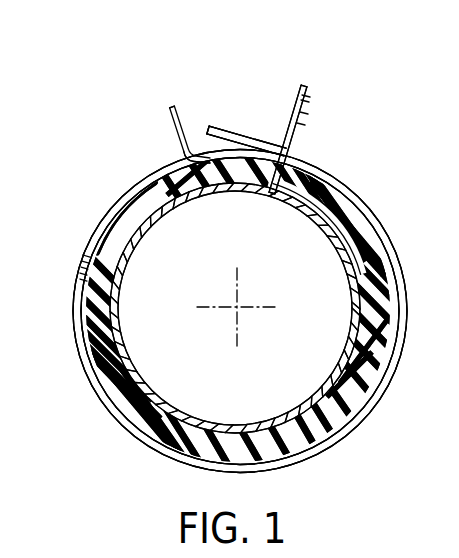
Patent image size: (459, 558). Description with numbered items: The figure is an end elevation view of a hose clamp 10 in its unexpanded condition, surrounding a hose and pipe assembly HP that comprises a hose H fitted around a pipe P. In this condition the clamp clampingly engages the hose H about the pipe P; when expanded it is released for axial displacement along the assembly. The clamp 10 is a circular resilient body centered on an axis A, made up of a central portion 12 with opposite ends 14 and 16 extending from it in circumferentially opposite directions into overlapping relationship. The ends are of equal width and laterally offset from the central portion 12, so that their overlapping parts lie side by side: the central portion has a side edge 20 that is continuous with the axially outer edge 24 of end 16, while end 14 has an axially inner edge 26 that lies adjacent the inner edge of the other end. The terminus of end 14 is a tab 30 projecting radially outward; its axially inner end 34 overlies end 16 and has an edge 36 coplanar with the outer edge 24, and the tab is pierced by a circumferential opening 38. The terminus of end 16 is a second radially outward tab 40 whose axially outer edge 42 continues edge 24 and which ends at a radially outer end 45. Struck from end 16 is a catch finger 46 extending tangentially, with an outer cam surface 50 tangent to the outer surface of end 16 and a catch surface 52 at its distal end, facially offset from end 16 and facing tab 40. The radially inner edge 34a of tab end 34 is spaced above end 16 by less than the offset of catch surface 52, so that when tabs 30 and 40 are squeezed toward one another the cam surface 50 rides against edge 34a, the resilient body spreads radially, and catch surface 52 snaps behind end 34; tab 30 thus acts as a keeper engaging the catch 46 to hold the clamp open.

The hose clamp 10 is at (393, 93).
The central portion 12 is at (162, 458).
The end 14 is at (123, 190).
The end 16 is at (372, 207).
The side edge 20 is at (298, 453).
The axially outer edge 24 is at (375, 225).
The axially inner edge 26 is at (110, 218).
The tab 30 is at (308, 80).
The axially inner end 34 is at (300, 133).
The radially inner edge 34a is at (272, 188).
The edge 36 is at (302, 115).
The opening 38 is at (312, 98).
The tab 40 is at (163, 103).
The axially outer edge 42 is at (178, 128).
The radially outer end 45 is at (173, 107).
The finger 46 is at (222, 127).
The outer cam surface 50 is at (237, 133).
The catch surface 52 is at (213, 133).
The hose H is at (337, 218).
The pipe P is at (345, 253).
The hose and pipe assembly HP is at (347, 313).
The axis A is at (233, 310).